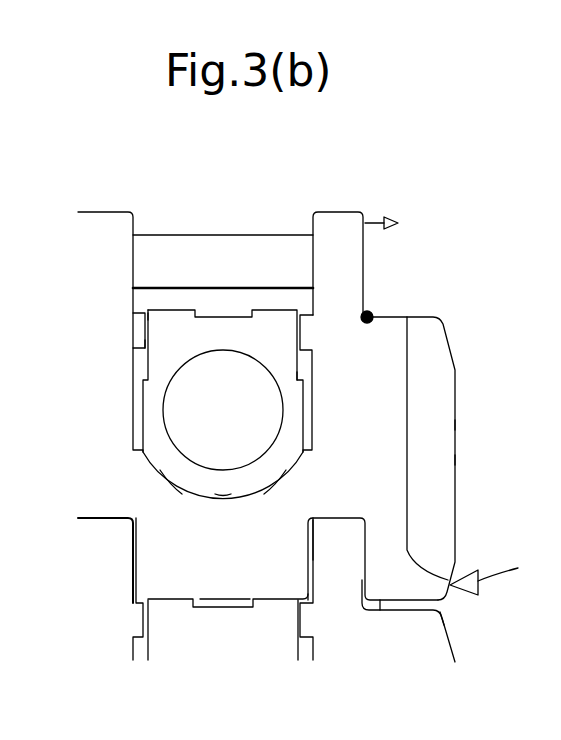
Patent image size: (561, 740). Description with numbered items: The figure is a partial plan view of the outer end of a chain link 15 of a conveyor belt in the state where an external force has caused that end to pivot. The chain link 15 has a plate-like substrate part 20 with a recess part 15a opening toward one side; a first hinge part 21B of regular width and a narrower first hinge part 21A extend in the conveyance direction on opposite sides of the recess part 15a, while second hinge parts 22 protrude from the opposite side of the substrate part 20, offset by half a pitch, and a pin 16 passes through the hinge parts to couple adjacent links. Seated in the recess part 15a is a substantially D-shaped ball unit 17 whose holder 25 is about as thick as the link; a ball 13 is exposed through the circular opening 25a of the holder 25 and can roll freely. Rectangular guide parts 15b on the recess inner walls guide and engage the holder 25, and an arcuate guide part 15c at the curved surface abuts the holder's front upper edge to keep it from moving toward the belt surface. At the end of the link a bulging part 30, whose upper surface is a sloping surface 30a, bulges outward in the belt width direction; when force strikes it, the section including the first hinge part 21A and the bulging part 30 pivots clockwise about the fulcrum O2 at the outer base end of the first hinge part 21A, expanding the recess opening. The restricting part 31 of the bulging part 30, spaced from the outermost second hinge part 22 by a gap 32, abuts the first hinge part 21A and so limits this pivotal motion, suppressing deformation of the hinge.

The ball 13 is at (188, 403).
The chain link 15 is at (460, 382).
The recess part 15a is at (178, 485).
The guide part 15b is at (150, 318).
The guide part 15c is at (270, 480).
The pin 16 is at (215, 247).
The ball unit 17 is at (165, 611).
The substrate part 20 is at (323, 500).
The first hinge part 21A is at (336, 228).
The first hinge part 21B is at (101, 232).
The second hinge part 22 is at (268, 590).
The holder 25 is at (162, 358).
The circular opening 25a is at (292, 408).
The bulging part 30 is at (438, 418).
The sloping surface 30a is at (440, 455).
The restricting part 31 is at (408, 585).
The gap 32 is at (362, 585).
The fulcrum O2 is at (372, 313).